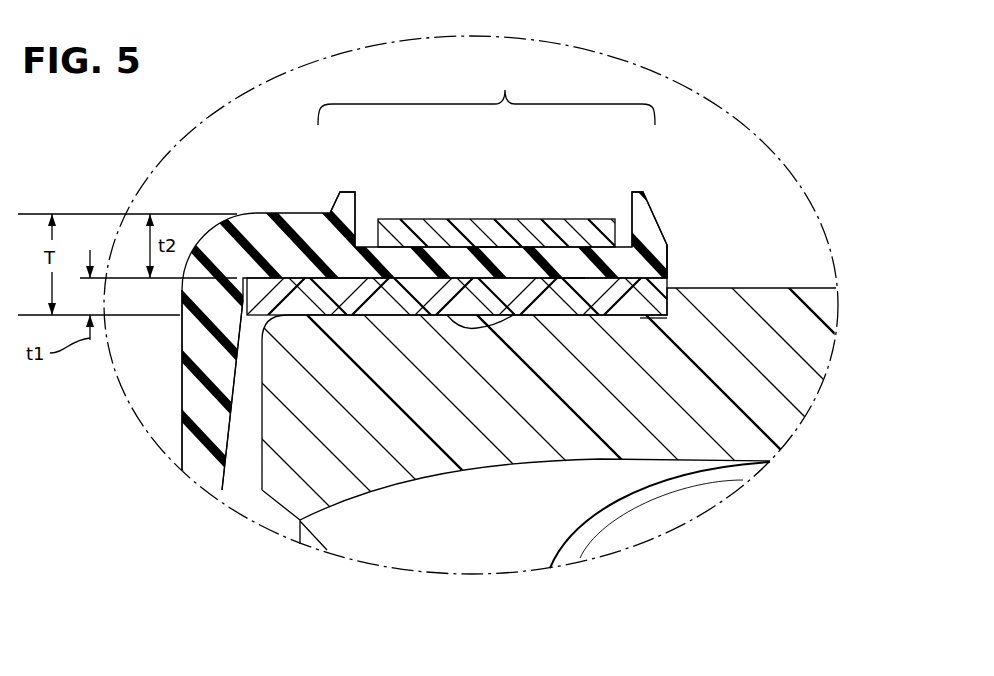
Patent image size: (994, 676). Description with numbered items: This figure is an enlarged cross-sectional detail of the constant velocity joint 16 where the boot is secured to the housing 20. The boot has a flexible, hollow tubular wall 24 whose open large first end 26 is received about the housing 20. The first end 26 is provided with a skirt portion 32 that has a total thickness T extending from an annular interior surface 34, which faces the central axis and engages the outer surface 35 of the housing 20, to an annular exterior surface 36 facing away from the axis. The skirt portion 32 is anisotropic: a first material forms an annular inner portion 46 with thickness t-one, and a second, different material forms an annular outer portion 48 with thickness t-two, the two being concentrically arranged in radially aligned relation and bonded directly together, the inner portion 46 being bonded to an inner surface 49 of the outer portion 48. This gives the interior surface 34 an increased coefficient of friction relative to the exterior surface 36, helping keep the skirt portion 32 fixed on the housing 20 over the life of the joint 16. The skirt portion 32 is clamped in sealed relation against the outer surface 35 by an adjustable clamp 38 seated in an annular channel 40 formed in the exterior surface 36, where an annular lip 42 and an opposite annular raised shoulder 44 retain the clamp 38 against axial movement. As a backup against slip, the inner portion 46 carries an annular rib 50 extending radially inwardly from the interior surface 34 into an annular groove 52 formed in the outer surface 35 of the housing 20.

The constant velocity joint 16 is at (868, 273).
The housing 20 is at (752, 288).
The tubular wall 24 is at (203, 407).
The first end 26 is at (668, 257).
The skirt portion 32 is at (486, 94).
The interior surface 34 is at (640, 318).
The outer surface 35 is at (342, 298).
The exterior surface 36 is at (286, 206).
The adjustable clamp 38 is at (445, 219).
The annular channel 40 is at (498, 255).
The annular lip 42 is at (648, 191).
The annular raised shoulder 44 is at (354, 192).
The annular inner portion 46 is at (650, 298).
The annular outer portion 48 is at (560, 262).
The inner surface 49 is at (550, 320).
The annular rib 50 is at (468, 324).
The annular groove 52 is at (508, 325).